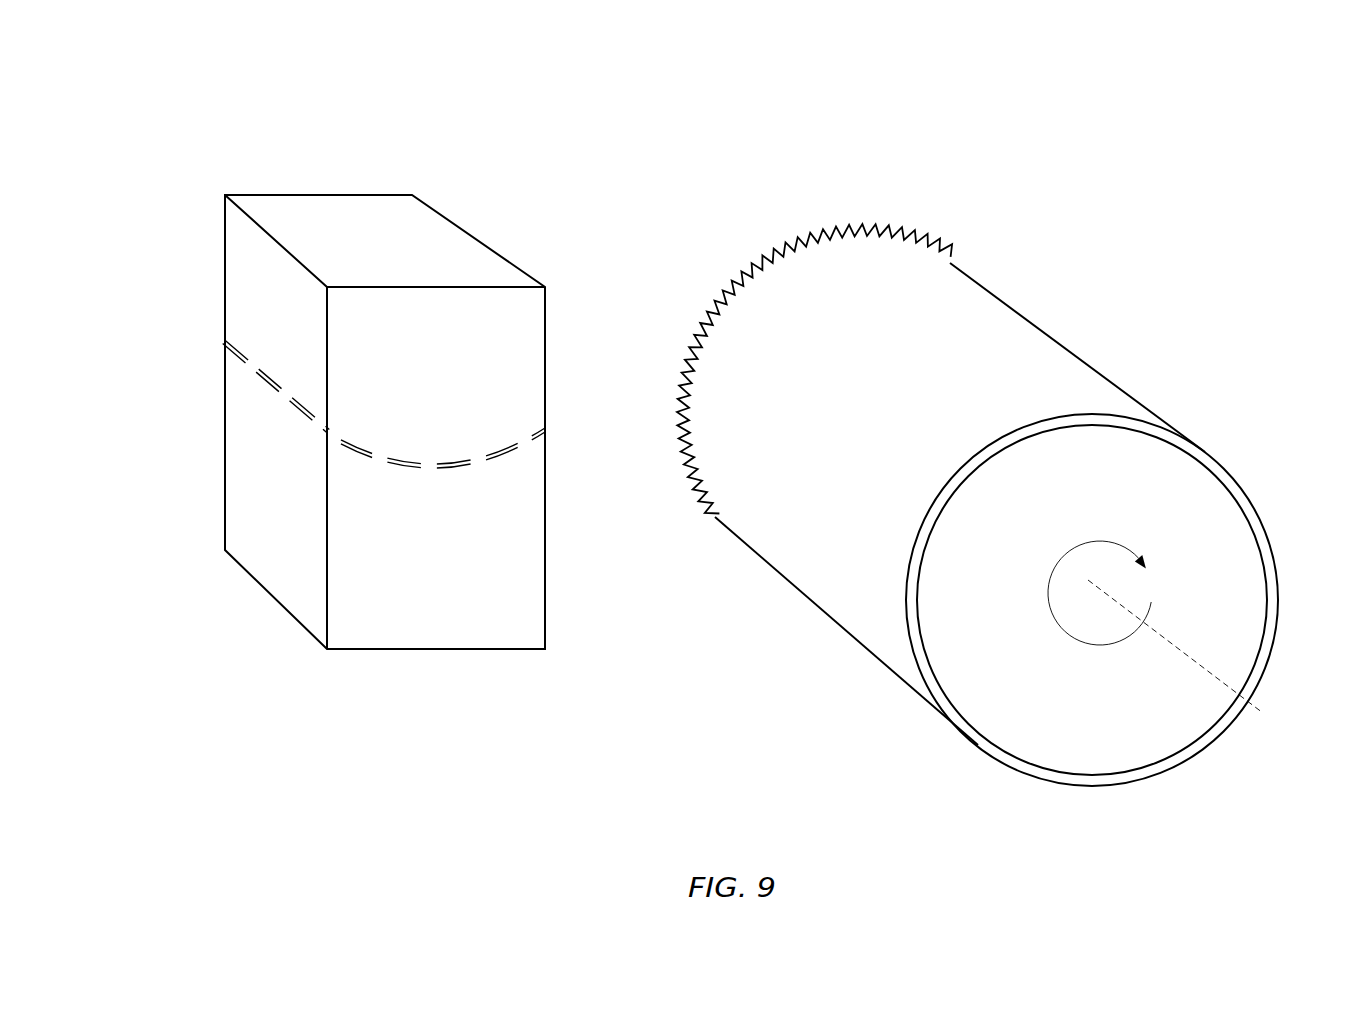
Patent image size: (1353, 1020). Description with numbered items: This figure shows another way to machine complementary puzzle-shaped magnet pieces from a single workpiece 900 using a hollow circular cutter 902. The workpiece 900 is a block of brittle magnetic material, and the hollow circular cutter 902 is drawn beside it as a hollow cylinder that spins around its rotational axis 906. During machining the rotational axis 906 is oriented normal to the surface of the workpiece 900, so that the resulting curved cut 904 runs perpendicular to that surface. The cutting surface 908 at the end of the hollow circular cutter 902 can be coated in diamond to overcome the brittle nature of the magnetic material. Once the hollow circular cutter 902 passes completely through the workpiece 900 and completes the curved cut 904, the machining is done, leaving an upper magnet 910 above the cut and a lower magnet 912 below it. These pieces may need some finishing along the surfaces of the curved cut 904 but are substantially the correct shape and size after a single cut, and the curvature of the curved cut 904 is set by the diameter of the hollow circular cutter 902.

The workpiece 900 is at (222, 168).
The hollow circular cutter 902 is at (816, 454).
The curved cut 904 is at (315, 401).
The rotational axis 906 is at (1155, 627).
The cutting surface 908 is at (749, 230).
The upper magnet 910 is at (404, 372).
The lower magnet 912 is at (405, 556).